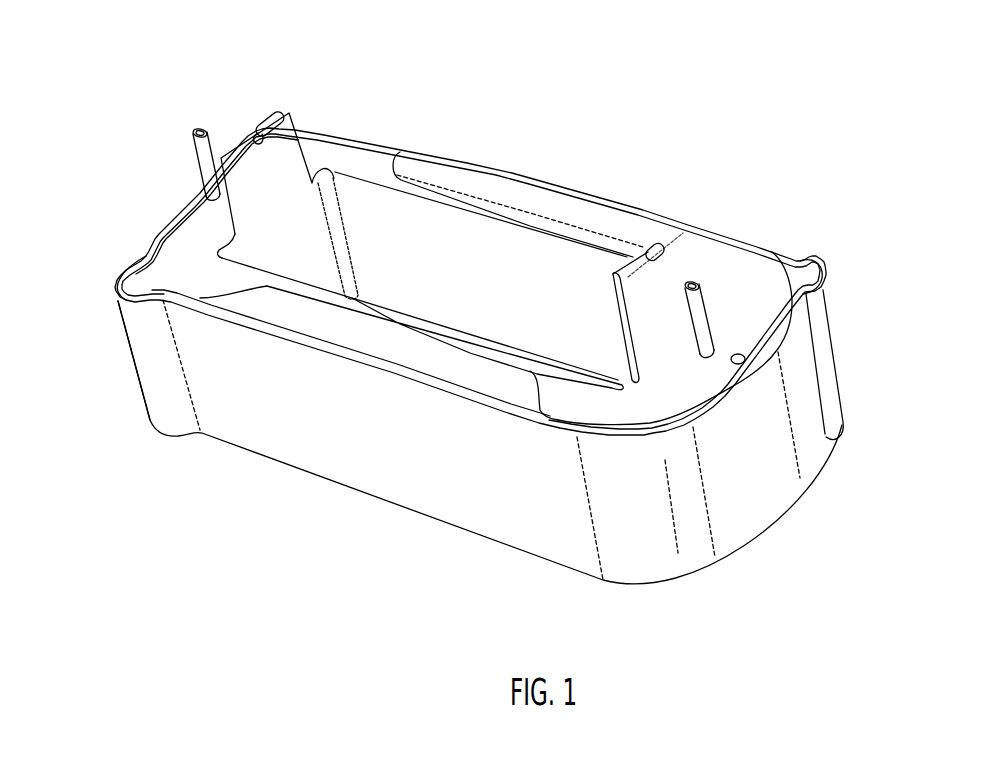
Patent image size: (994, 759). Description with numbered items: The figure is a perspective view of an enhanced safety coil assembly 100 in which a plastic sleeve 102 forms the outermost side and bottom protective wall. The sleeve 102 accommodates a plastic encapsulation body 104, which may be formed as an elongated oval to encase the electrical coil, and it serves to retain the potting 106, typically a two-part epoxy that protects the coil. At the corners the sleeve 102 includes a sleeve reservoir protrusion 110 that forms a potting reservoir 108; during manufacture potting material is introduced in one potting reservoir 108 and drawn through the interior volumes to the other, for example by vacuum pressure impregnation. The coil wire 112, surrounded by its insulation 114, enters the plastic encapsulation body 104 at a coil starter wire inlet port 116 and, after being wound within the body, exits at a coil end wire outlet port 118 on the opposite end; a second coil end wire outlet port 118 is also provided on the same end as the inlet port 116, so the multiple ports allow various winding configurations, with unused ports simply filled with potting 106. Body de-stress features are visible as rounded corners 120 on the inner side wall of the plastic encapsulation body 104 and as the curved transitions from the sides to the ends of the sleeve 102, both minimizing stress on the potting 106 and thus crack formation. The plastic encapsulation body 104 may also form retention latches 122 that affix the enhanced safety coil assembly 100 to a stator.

The enhanced safety coil assembly 100 is at (492, 112).
The plastic sleeve 102 is at (652, 566).
The plastic encapsulation body 104 is at (752, 281).
The potting 106 is at (503, 193).
The potting reservoir 108 is at (140, 279).
The sleeve reservoir protrusion 110 is at (147, 390).
The coil wire 112 is at (201, 128).
The insulation 114 is at (205, 157).
The coil starter wire inlet port 116 is at (737, 366).
The coil end wire outlet port 118 is at (703, 357).
The rounded corners 120 is at (331, 178).
The retention latches 122 is at (268, 112).